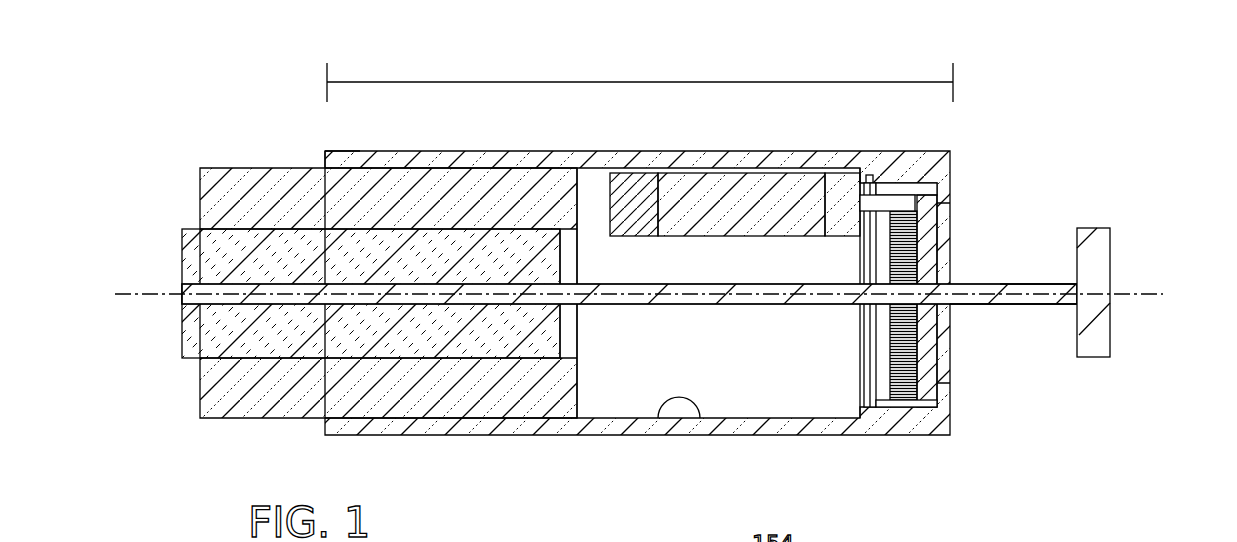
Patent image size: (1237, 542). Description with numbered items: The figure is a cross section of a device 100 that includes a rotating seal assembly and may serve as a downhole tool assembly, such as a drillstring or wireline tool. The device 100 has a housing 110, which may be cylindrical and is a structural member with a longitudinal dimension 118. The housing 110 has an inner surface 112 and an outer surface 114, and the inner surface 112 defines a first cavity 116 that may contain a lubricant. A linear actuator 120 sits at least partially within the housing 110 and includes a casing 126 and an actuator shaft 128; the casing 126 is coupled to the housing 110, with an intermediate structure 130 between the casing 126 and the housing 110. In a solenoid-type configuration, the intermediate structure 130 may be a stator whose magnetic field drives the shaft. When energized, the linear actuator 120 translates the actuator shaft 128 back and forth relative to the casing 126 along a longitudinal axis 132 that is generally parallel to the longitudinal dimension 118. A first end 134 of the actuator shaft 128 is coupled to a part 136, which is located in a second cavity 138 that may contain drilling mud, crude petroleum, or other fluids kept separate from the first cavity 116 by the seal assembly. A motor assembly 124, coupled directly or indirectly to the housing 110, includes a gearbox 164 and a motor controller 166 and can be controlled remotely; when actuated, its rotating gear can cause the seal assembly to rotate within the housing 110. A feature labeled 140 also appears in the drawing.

The device 100 is at (636, 257).
The housing 110 is at (498, 157).
The inner surface 112 is at (659, 418).
The outer surface 114 is at (353, 151).
The first cavity 116 is at (806, 377).
The longitudinal dimension 118 is at (628, 82).
The linear actuator 120 is at (585, 360).
The motor assembly 124 is at (754, 165).
The casing 126 is at (195, 325).
The actuator shaft 128 is at (713, 304).
The intermediate structure 130 is at (218, 405).
The longitudinal axis 132 is at (1147, 290).
The first end 134 is at (1063, 302).
The part 136 is at (1093, 347).
The second cavity 138 is at (997, 323).
The bearing assembly 140 is at (933, 227).
The gearbox 164 is at (845, 187).
The motor controller 166 is at (626, 185).